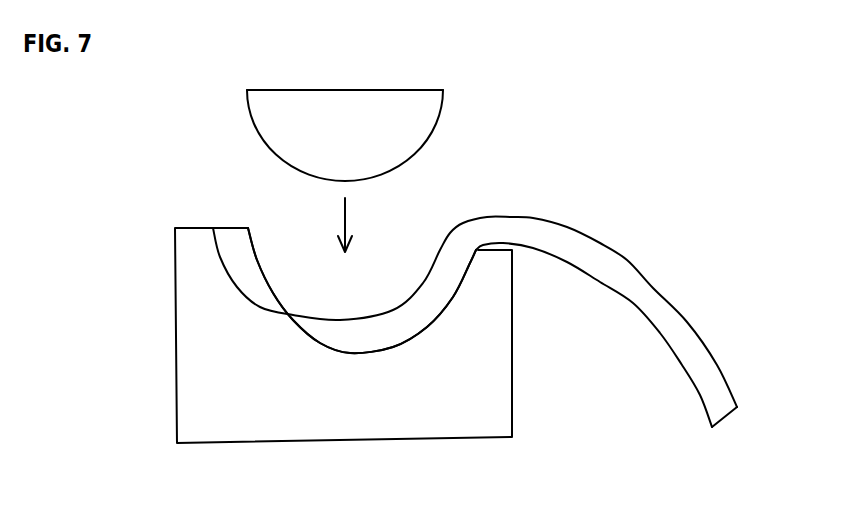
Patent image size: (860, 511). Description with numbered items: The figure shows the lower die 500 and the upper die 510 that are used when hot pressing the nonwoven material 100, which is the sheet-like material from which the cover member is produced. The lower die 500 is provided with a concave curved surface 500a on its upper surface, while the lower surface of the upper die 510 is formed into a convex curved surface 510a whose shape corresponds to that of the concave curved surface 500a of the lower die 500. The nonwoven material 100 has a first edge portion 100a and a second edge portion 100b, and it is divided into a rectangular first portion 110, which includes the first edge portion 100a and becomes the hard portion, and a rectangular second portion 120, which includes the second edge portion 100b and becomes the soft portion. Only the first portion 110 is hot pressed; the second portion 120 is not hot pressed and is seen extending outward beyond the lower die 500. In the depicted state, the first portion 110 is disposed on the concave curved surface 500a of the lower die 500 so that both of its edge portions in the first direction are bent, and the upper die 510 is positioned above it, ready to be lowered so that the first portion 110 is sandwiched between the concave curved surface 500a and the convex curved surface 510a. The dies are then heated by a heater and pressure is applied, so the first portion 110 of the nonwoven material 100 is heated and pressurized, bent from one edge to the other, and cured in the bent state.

The nonwoven material 100 is at (422, 313).
The first edge portion 100a is at (228, 256).
The second edge portion 100b is at (717, 400).
The first portion 110 is at (308, 352).
The second portion 120 is at (606, 322).
The lower die 500 is at (313, 357).
The concave curved surface 500a is at (259, 320).
The upper die 510 is at (340, 136).
The convex curved surface 510a is at (418, 152).